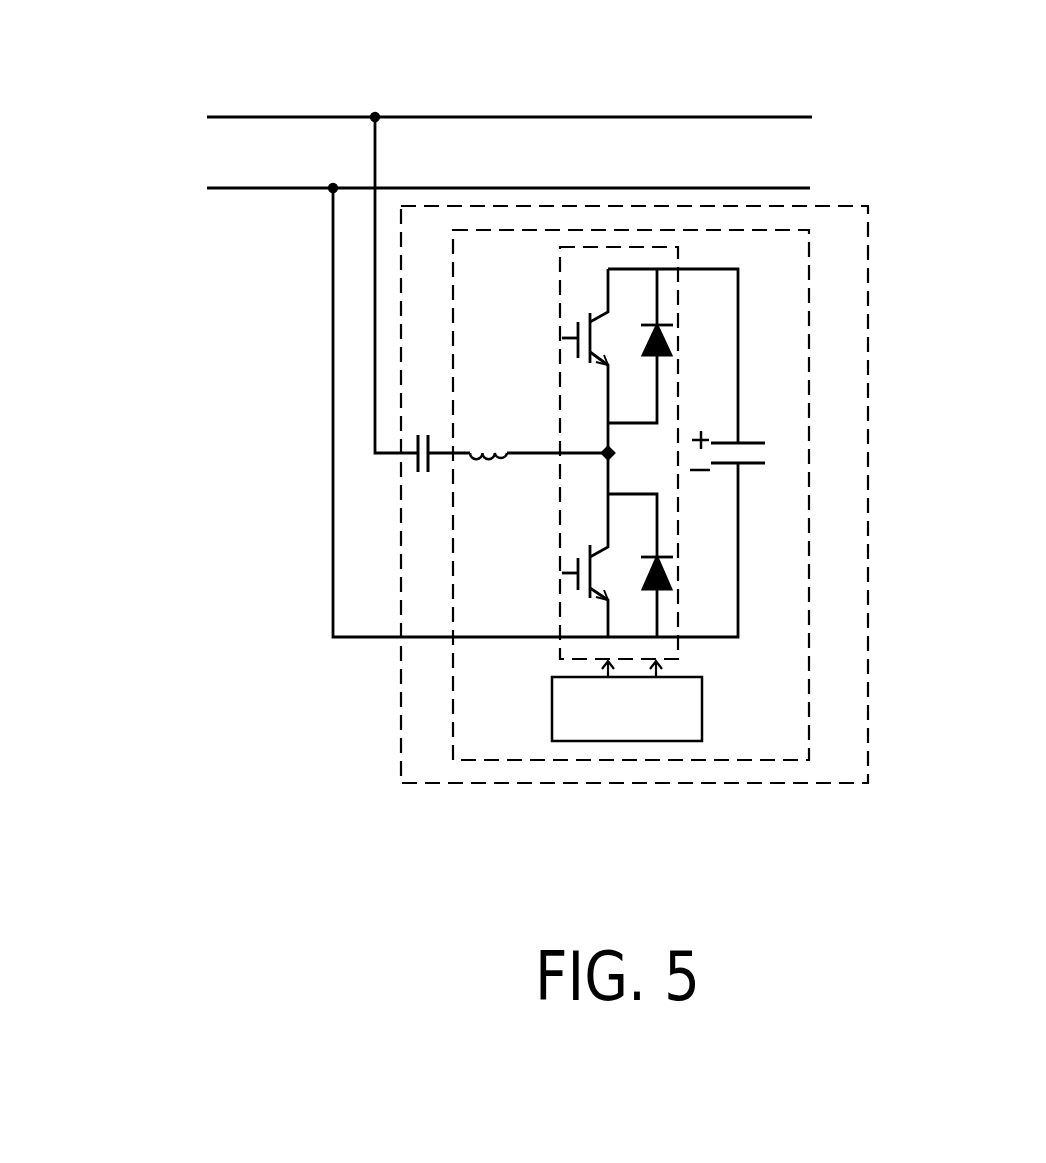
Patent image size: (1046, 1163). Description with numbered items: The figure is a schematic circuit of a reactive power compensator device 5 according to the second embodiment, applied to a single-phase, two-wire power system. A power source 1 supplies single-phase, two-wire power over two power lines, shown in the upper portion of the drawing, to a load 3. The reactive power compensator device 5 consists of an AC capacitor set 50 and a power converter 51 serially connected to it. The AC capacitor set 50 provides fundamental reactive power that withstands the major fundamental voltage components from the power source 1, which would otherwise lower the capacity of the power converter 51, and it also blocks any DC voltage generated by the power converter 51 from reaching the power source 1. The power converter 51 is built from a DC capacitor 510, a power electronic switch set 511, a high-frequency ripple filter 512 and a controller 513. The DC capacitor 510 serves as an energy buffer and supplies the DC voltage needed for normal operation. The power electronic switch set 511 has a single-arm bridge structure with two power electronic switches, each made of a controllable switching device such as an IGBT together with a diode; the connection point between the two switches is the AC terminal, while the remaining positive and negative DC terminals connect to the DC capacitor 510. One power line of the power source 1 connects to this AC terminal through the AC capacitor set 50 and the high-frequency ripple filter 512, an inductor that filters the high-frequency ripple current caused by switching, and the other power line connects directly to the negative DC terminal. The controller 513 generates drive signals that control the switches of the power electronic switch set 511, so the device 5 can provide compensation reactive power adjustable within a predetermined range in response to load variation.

The power source 1 is at (178, 213).
The load 3 is at (853, 100).
The reactive power compensator device 5 is at (837, 785).
The AC capacitor set 50 is at (410, 462).
The power converter 51 is at (775, 761).
The DC capacitor 510 is at (748, 437).
The power electronic switch set 511 is at (562, 292).
The high-frequency ripple filter 512 is at (493, 465).
The controller 513 is at (702, 708).